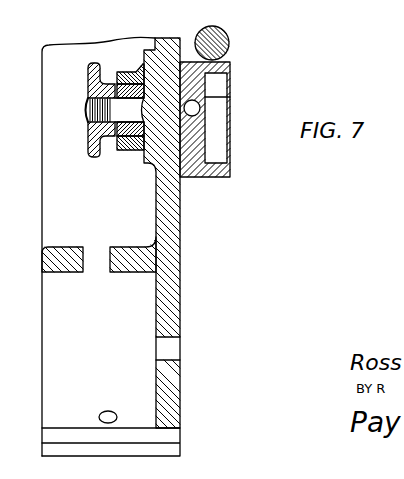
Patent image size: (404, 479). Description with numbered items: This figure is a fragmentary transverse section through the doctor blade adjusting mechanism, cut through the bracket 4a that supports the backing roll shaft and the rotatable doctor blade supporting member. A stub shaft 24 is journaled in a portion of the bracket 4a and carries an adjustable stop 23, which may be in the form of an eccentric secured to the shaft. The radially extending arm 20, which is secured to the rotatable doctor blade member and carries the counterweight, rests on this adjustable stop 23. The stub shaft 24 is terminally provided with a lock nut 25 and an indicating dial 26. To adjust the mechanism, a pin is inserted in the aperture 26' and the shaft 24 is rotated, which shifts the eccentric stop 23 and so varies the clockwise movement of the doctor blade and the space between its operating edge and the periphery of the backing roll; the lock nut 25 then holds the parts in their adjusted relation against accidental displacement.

The bracket 4a is at (181, 258).
The radially extending arm 20 is at (229, 35).
The adjustable stop 23 is at (231, 67).
The stub shaft 24 is at (230, 97).
The lock nut 25 is at (88, 154).
The indicating dial 26 is at (110, 79).
The aperture 26' is at (226, 120).